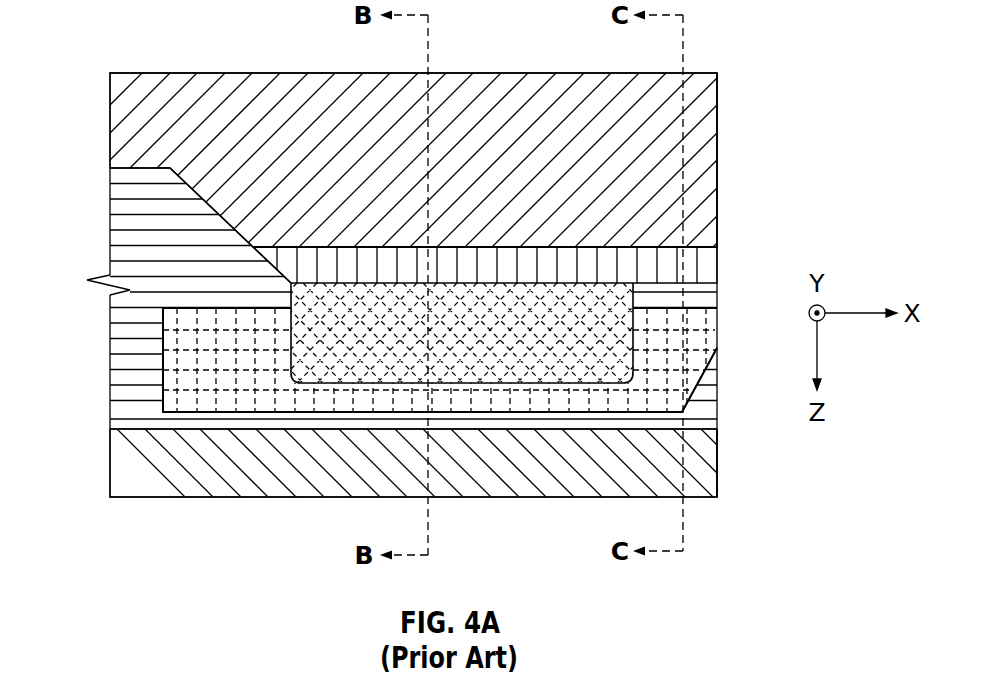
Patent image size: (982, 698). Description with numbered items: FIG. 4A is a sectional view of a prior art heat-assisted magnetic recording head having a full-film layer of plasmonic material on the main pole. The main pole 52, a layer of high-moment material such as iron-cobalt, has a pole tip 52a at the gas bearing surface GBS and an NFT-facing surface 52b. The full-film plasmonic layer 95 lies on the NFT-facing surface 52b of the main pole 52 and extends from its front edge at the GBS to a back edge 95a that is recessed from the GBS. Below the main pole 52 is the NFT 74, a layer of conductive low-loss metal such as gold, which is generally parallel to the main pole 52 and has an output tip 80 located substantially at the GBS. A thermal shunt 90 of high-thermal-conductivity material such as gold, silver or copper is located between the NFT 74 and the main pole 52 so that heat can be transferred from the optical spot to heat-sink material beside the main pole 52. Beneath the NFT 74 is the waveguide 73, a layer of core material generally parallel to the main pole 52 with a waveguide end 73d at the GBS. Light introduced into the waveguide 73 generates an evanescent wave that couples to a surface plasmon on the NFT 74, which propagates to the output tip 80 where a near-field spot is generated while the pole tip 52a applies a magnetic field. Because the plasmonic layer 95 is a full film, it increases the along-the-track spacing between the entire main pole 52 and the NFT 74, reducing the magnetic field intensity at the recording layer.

The main pole 52 is at (660, 152).
The pole tip 52a is at (717, 168).
The NFT-facing surface 52b is at (290, 247).
The gas bearing surface GBS is at (717, 231).
The full-film plasmonic layer 95 is at (700, 263).
The back edge 95a is at (276, 268).
The near-field transducer (NFT) 74 is at (187, 343).
The output tip 80 is at (698, 367).
The thermal shunt 90 is at (367, 345).
The waveguide 73 is at (548, 462).
The waveguide end 73d is at (717, 456).